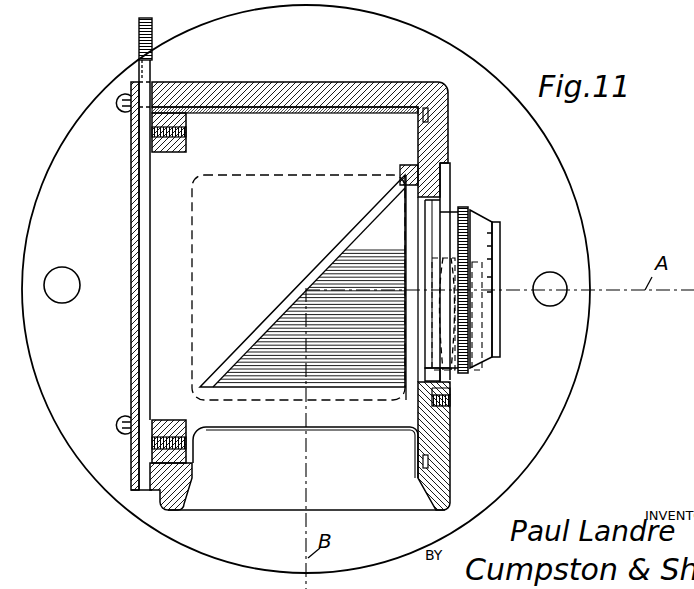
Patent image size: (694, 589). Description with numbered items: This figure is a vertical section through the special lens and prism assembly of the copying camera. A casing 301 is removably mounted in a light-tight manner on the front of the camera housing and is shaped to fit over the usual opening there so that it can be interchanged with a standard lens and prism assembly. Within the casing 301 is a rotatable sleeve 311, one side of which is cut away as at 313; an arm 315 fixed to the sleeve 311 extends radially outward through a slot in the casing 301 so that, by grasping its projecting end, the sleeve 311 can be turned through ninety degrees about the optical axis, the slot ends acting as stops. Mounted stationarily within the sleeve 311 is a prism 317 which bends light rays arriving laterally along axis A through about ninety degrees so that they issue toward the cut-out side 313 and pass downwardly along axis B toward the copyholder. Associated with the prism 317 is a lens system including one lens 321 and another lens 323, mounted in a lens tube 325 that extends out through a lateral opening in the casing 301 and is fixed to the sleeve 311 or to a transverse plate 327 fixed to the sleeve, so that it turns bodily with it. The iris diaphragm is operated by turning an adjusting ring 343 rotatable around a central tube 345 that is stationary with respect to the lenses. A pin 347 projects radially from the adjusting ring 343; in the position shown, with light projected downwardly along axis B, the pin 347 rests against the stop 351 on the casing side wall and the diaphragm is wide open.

The casing 301 is at (330, 82).
The rotatable sleeve 311 is at (341, 113).
The cut away side 313 is at (262, 428).
The arm 315 is at (138, 21).
The prism 317 is at (372, 219).
The lens 321 is at (443, 258).
The lens 323 is at (483, 310).
The lens tube 325 is at (435, 345).
The transverse plate 327 is at (405, 428).
The adjusting ring 343 is at (465, 207).
The central tube 345 is at (505, 240).
The pin 347 is at (448, 378).
The adjustable stop 351 is at (452, 412).